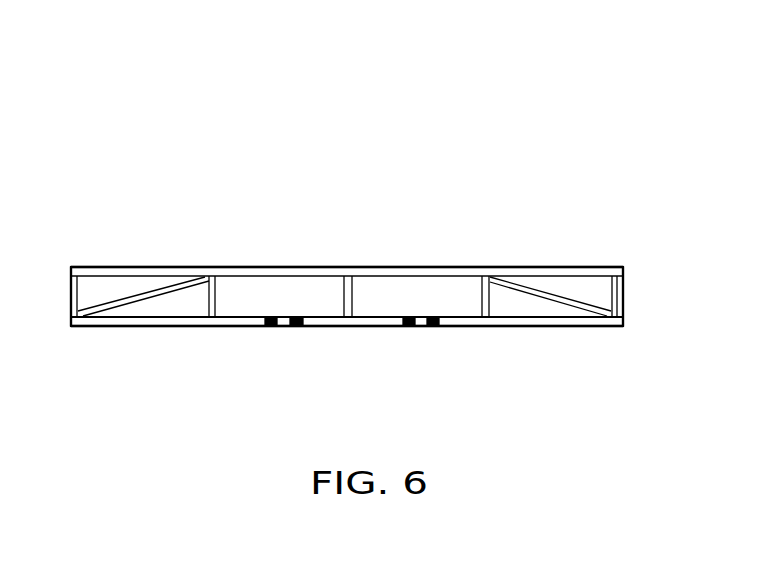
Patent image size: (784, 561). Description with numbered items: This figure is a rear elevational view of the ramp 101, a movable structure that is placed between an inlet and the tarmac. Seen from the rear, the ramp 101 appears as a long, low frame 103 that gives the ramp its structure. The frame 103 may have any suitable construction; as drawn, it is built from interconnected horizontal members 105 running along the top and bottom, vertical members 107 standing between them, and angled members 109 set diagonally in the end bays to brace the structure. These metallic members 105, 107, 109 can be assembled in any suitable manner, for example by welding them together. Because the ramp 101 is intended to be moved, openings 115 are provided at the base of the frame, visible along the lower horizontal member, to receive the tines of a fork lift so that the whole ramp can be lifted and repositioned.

The ramp 101 is at (653, 142).
The frame 103 is at (623, 327).
The horizontal members 105 is at (175, 325).
The vertical members 107 is at (615, 293).
The angled members 109 is at (158, 290).
The openings 115 is at (283, 327).